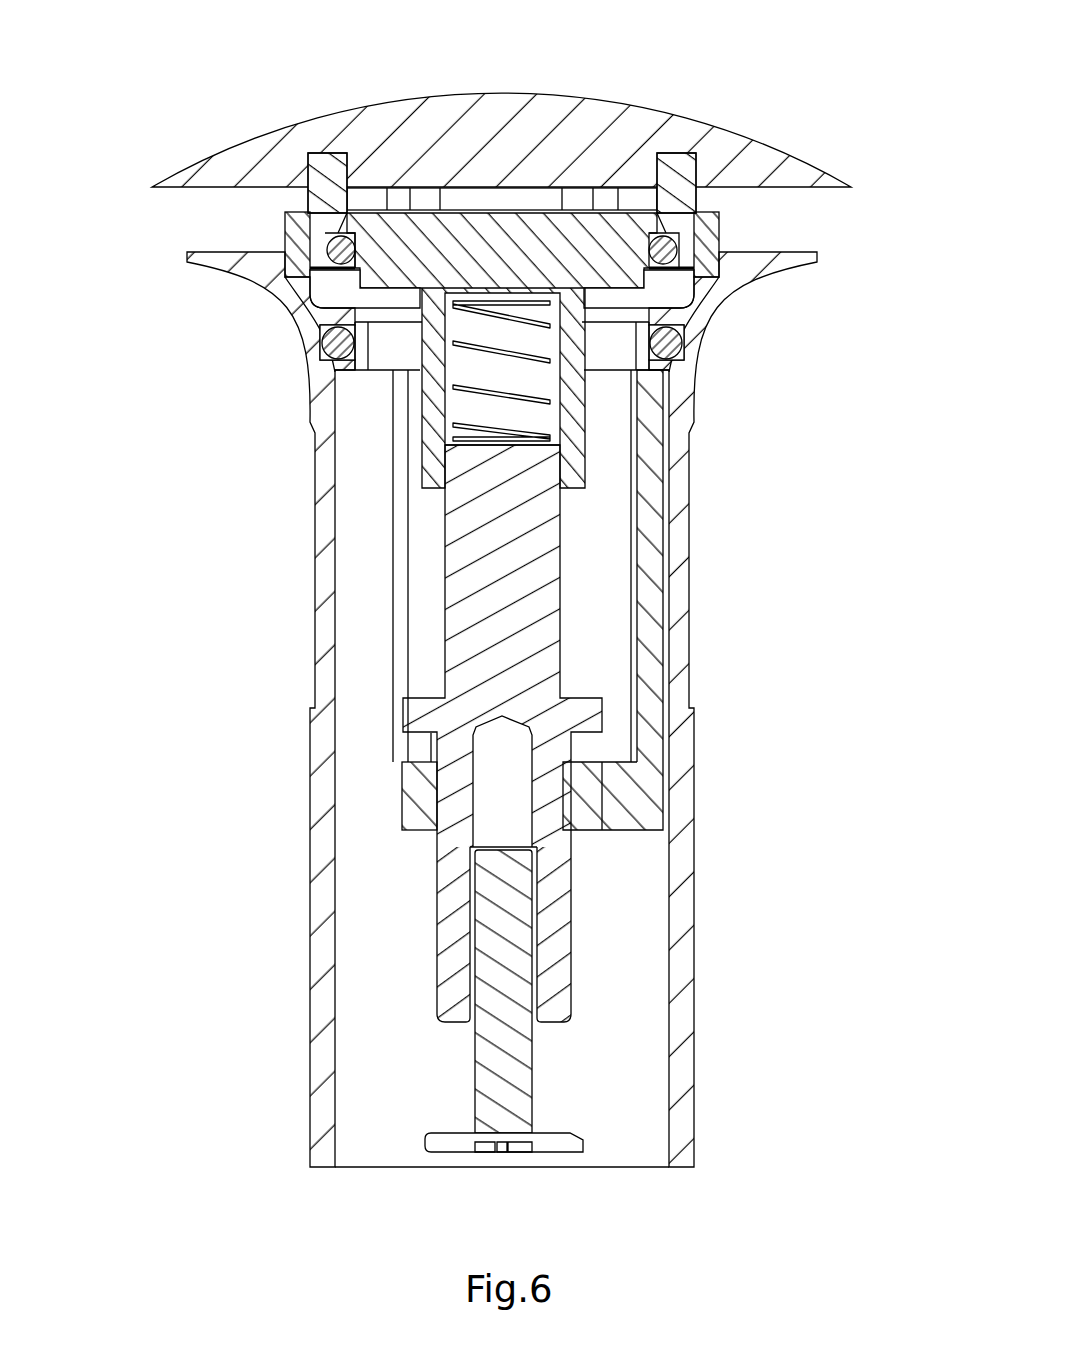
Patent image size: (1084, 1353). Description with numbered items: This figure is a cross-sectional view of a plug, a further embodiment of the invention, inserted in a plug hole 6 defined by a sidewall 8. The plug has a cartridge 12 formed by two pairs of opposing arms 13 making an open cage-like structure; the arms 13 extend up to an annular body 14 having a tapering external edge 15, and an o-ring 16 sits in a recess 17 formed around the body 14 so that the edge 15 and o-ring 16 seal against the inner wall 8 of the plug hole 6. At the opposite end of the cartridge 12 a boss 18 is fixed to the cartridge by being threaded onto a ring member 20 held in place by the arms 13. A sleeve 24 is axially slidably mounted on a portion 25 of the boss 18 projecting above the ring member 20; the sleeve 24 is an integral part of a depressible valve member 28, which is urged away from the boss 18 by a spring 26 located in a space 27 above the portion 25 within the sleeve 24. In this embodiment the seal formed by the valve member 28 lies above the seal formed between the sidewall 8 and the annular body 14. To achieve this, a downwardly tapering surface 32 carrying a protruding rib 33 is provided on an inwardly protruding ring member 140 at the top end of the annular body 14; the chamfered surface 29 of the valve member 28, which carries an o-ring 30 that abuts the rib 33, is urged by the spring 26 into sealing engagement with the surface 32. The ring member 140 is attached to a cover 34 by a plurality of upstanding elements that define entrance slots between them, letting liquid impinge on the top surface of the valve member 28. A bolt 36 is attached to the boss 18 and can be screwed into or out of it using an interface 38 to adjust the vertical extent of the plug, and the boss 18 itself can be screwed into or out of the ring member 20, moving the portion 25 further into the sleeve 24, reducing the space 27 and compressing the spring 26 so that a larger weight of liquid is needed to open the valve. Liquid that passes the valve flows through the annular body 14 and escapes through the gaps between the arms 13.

The cover 34 is at (580, 133).
The ring member 140 is at (677, 172).
The projecting rib 33 is at (668, 216).
The downwardly tapering surface 32 is at (685, 252).
The plug hole 6 is at (652, 268).
The annular body 14 is at (706, 258).
The valve member 28 is at (578, 245).
The sidewall 8 is at (713, 318).
The sleeve 24 is at (573, 352).
The spring 26 is at (553, 404).
The cartridge 12 is at (677, 522).
The portion 25 is at (517, 635).
The arms 13 is at (400, 580).
The ring member 20 is at (590, 810).
The boss 18 is at (562, 940).
The bolt 36 is at (520, 1095).
The interface 38 is at (497, 1153).
The chamfered surface 29 is at (338, 221).
The o-ring 30 is at (327, 251).
The tapering external edge 15 is at (320, 306).
The o-ring 16 is at (325, 350).
The recess 17 is at (337, 368).
The space 27 is at (485, 368).